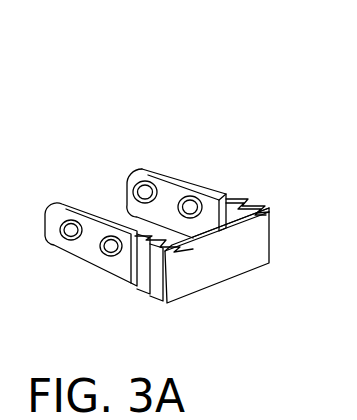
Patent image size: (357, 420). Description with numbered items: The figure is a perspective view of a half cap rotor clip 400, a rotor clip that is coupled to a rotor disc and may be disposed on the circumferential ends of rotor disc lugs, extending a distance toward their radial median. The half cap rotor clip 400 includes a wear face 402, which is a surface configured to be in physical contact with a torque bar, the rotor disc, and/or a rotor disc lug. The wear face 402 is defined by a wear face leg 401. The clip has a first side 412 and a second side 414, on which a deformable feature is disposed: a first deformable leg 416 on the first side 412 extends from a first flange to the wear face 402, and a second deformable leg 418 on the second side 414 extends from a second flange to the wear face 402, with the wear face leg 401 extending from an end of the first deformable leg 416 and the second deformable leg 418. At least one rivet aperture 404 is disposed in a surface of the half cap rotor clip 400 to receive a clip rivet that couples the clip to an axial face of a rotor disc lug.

The half cap rotor clip 400 is at (127, 118).
The wear face leg 401 is at (230, 262).
The wear face 402 is at (253, 238).
The rivet aperture 404 is at (73, 230).
The first side 412 is at (196, 181).
The second side 414 is at (123, 270).
The first deformable leg 416 is at (230, 200).
The second deformable leg 418 is at (173, 283).